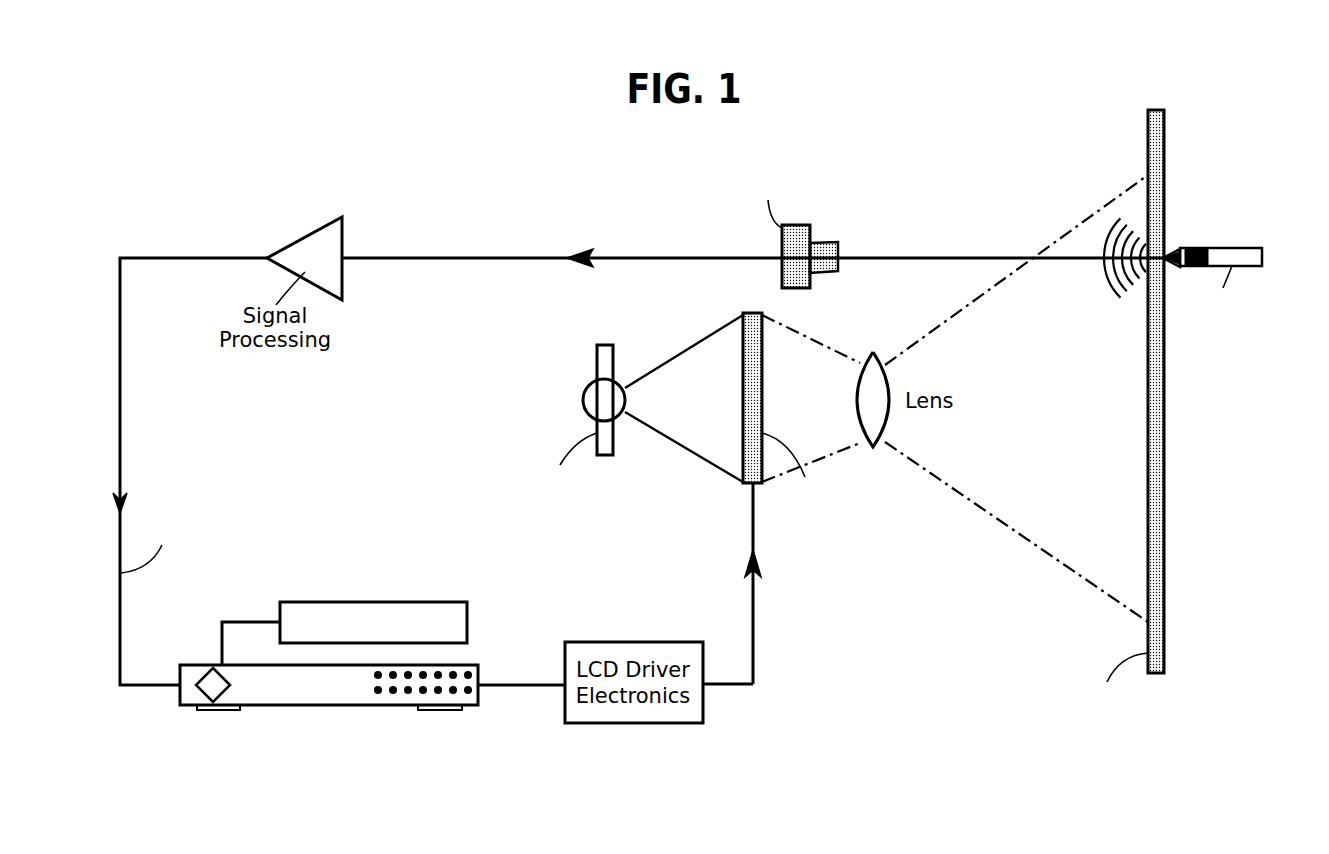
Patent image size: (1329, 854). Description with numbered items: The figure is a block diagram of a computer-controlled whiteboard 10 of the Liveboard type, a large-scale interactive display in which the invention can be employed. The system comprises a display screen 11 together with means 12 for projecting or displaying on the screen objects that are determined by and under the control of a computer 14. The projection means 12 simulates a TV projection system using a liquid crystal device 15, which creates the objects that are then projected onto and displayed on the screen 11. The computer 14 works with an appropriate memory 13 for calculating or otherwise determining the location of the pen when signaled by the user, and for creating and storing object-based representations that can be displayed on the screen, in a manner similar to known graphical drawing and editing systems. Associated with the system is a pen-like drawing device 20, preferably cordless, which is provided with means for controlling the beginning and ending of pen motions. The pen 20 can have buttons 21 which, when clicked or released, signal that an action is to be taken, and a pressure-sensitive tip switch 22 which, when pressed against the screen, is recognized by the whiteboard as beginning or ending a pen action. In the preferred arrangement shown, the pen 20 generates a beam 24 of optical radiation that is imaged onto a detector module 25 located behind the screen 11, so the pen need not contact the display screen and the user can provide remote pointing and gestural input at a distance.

The whiteboard 10 is at (431, 201).
The display screen 11 is at (1157, 508).
The means for projecting or displaying 12 is at (706, 411).
The memory 13 is at (448, 607).
The computer 14 is at (190, 698).
The liquid crystal device 15 is at (760, 386).
The pen-like drawing device 20 is at (1261, 228).
The buttons 21 is at (1200, 247).
The pressure-sensitive tip switch 22 is at (1166, 246).
The beam of optical radiation 24 is at (1113, 278).
The detector module 25 is at (840, 244).